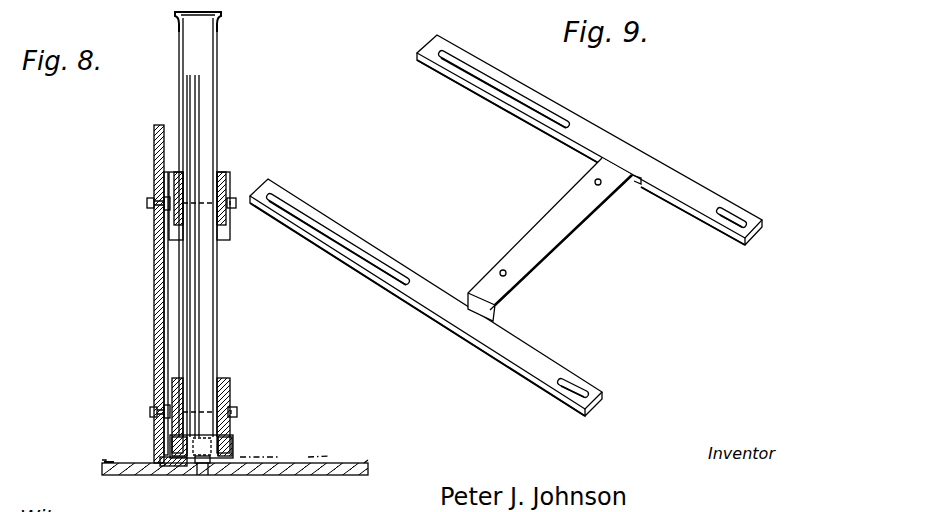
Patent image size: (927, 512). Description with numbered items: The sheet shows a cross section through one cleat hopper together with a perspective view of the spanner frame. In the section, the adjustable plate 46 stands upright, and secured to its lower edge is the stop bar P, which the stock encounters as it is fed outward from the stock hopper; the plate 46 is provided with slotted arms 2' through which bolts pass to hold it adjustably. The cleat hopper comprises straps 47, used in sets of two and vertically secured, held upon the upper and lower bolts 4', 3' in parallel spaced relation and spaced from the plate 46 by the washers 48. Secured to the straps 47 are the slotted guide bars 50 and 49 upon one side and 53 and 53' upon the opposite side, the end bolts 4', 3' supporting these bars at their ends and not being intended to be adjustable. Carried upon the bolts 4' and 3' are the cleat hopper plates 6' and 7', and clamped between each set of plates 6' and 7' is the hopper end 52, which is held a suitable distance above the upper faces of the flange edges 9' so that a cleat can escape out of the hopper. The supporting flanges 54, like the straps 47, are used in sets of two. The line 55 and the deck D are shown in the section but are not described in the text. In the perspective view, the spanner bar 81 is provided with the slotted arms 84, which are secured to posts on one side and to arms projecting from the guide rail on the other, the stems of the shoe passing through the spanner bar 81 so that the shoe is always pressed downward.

In FIG. 8, the cleat hopper plate 6' is at (180, 26).
In FIG. 8, the cleat hopper plate 7' is at (232, 227).
In FIG. 8, the hopper end 52 is at (202, 117).
In FIG. 8, the washer 48 is at (153, 174).
In FIG. 8, the upper forward bolt 4' is at (178, 184).
In FIG. 8, the slotted guide bar 50 is at (176, 226).
In FIG. 8, the slotted guide bar 53 is at (242, 210).
In FIG. 8, the adjustable plate 46 is at (155, 288).
In FIG. 8, the strap 47 is at (186, 320).
In FIG. 8, the slotted guide bar 49 is at (180, 386).
In FIG. 8, the slotted guide bar 53' is at (245, 406).
In FIG. 8, the lower forward bolt 3' is at (195, 403).
In FIG. 8, the supporting flange 54 is at (176, 445).
In FIG. 8, the center line 55 is at (278, 462).
In FIG. 8, the deck D is at (333, 462).
In FIG. 8, the slotted arm 2' is at (91, 441).
In FIG. 8, the stop bar P is at (168, 465).
In FIG. 8, the flange edge 9' is at (203, 482).
In FIG. 9, the slotted arm 84 is at (592, 130).
In FIG. 9, the spanner bar 81 is at (549, 224).